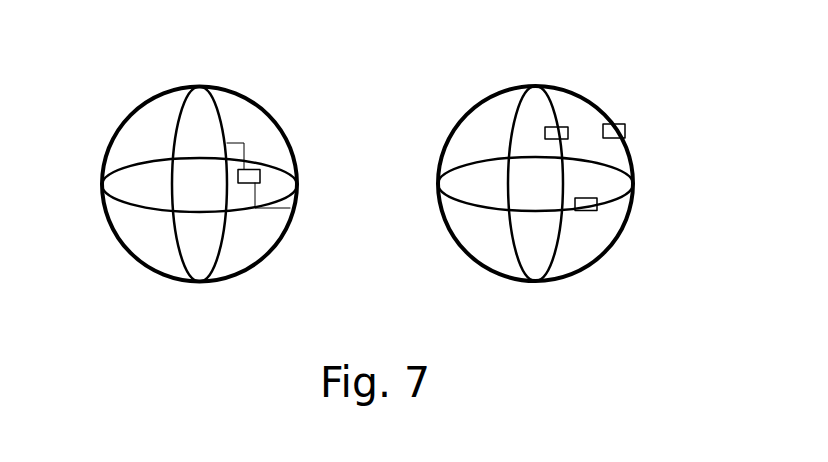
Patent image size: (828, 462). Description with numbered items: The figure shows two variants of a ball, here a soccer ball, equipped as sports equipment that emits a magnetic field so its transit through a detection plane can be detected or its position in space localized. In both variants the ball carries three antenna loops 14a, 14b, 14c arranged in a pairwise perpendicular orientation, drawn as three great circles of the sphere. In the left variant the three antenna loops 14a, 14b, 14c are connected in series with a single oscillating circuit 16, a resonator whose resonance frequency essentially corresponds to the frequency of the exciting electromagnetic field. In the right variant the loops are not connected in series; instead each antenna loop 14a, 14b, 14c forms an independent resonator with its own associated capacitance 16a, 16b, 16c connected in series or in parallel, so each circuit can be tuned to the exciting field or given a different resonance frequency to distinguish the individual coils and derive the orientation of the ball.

The antenna loop 14a is at (254, 100).
The antenna loop 14b is at (224, 88).
The antenna loop 14c is at (137, 205).
The oscillating circuit 16 is at (260, 172).
The capacitance 16a is at (625, 130).
The capacitance 16b is at (545, 127).
The capacitance 16c is at (583, 210).